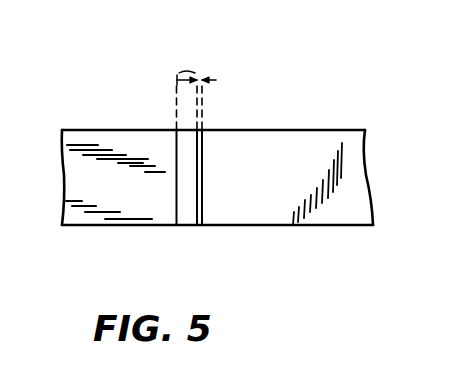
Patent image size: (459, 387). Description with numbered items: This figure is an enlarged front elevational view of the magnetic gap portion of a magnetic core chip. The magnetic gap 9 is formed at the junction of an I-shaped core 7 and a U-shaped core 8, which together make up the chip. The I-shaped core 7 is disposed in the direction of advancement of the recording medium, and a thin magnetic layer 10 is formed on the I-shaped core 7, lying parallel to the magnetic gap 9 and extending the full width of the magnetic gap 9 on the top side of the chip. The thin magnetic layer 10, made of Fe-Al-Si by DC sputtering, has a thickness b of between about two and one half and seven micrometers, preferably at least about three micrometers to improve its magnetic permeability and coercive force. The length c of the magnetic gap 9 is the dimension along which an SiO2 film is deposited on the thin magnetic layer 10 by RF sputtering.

The I-shaped core 7 is at (135, 207).
The U-shaped core 8 is at (292, 208).
The magnetic gap 9 is at (201, 150).
The thin magnetic layer 10 is at (183, 159).
The thickness b is at (187, 64).
The length c is at (200, 79).